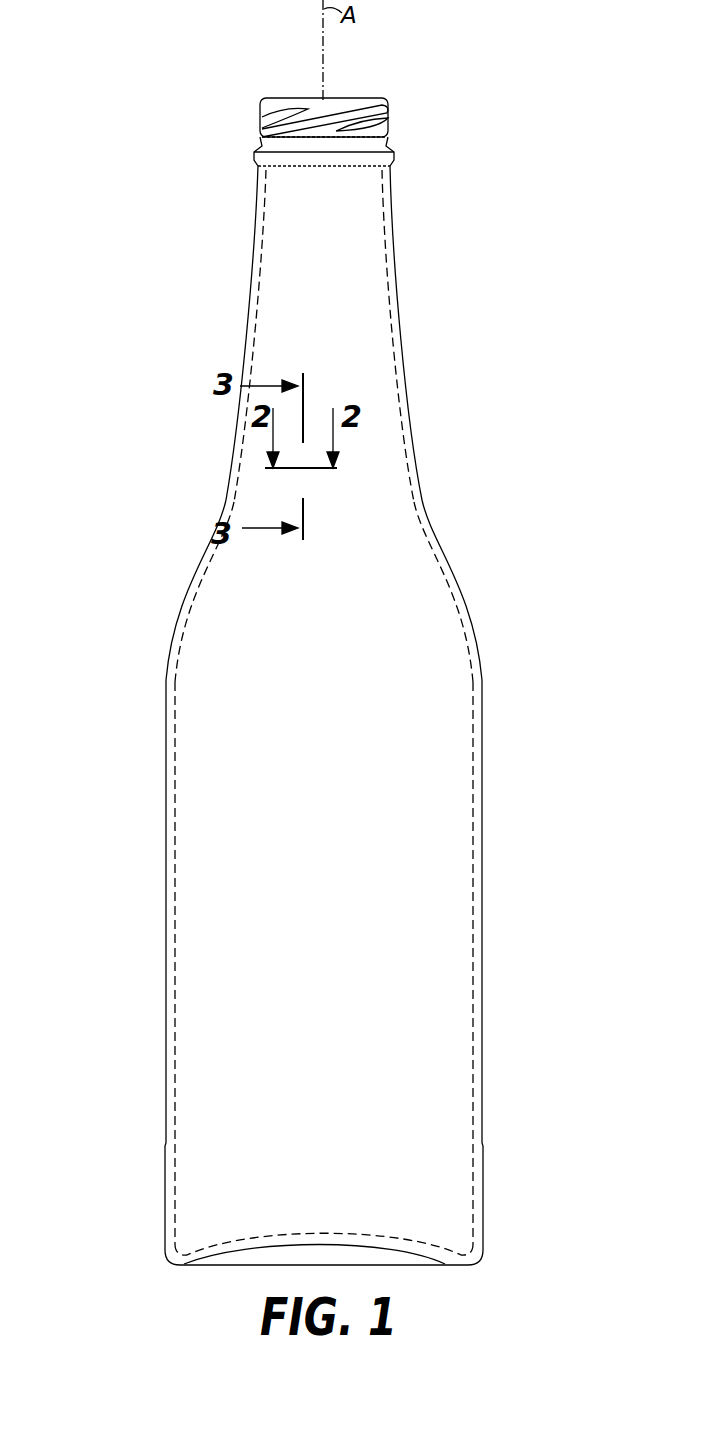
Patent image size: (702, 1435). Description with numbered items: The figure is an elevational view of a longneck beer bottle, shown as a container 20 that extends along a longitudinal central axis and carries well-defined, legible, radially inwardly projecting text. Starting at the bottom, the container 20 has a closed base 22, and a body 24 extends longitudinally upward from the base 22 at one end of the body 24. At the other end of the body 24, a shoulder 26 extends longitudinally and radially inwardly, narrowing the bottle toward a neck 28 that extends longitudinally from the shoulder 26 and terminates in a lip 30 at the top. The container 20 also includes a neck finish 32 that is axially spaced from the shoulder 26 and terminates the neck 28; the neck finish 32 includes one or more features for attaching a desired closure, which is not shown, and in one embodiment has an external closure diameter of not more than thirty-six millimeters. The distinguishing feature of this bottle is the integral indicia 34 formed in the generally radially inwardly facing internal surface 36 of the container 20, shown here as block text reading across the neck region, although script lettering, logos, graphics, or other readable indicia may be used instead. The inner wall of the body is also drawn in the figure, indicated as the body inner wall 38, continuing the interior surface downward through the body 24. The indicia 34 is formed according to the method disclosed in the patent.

The container 20 is at (237, 58).
The closed base 22 is at (439, 1265).
The body 24 is at (145, 942).
The shoulder 26 is at (172, 600).
The neck 28 is at (229, 254).
The lip 30 is at (374, 98).
The neck finish 32 is at (248, 110).
The integral indicia 34 is at (399, 423).
The internal surface 36 is at (266, 242).
The body inner wall 38 is at (167, 770).